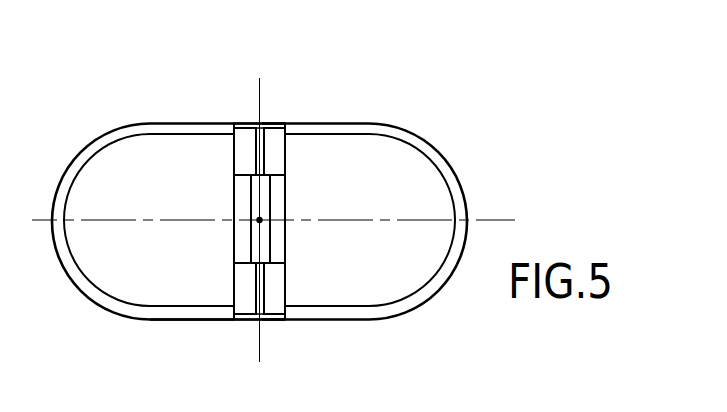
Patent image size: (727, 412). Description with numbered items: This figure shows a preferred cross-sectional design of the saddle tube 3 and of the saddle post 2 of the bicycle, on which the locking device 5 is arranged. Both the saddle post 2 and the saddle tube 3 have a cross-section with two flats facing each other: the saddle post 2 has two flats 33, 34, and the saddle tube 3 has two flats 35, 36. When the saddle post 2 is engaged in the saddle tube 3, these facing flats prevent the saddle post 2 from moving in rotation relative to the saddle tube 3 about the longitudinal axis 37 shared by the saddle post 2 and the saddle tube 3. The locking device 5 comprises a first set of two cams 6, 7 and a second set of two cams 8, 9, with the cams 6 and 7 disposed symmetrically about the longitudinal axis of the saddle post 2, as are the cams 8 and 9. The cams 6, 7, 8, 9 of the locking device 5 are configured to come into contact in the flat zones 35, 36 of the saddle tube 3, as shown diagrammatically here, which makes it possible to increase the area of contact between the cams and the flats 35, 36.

The saddle post 2 is at (425, 165).
The saddle tube 3 is at (413, 136).
The locking device 5 is at (302, 243).
The cam 6 is at (243, 287).
The cam 7 is at (275, 155).
The cam 8 is at (273, 288).
The cam 9 is at (244, 155).
The flat 33 is at (207, 135).
The flat 34 is at (197, 321).
The flat 35 is at (279, 116).
The flat 36 is at (290, 327).
The longitudinal axis 37 is at (262, 219).